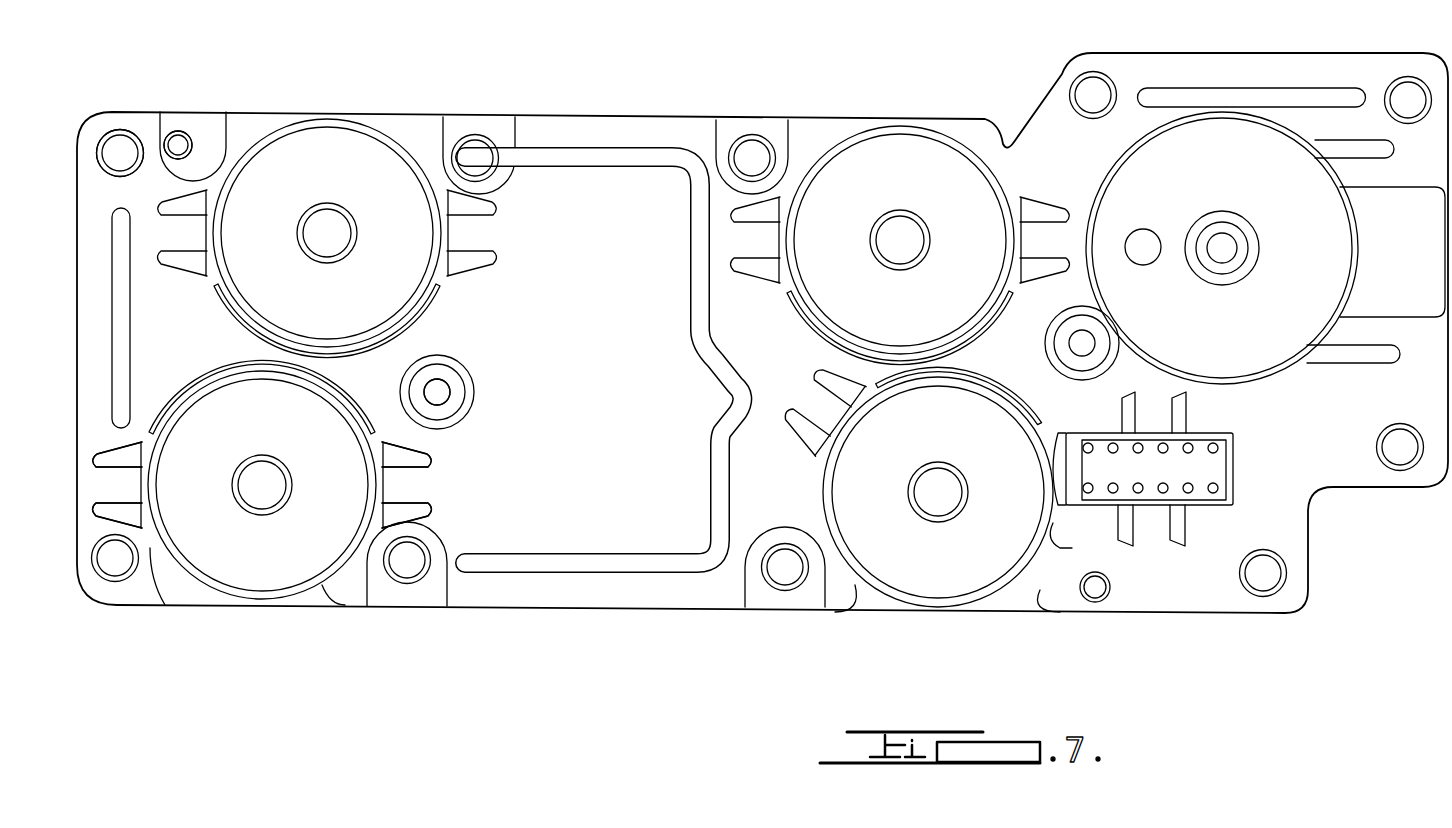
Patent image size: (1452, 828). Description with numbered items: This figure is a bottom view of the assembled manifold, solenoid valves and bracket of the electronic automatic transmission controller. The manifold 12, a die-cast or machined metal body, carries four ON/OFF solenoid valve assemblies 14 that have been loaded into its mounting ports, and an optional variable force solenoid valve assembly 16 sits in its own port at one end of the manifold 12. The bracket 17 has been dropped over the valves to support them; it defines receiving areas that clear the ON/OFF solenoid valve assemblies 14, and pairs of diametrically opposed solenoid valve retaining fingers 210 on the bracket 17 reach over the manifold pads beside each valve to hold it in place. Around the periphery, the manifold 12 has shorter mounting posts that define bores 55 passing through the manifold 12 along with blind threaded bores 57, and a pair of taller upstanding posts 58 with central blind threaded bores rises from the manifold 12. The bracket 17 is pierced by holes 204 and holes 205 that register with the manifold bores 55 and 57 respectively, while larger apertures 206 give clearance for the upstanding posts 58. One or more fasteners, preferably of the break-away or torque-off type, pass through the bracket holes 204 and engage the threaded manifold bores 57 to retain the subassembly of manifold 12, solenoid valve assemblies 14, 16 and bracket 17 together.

The manifold 12 is at (858, 613).
The ON/OFF solenoid valve assembly 14 is at (330, 143).
The variable force solenoid valve assembly 16 is at (1333, 250).
The bracket 17 is at (622, 117).
The bores 55 is at (118, 140).
The blind threaded bores 57 is at (173, 157).
The upstanding posts 58 is at (443, 358).
The holes 204 is at (127, 137).
The holes 205 is at (183, 140).
The apertures 206 is at (460, 392).
The solenoid valve retaining fingers 210 is at (145, 483).